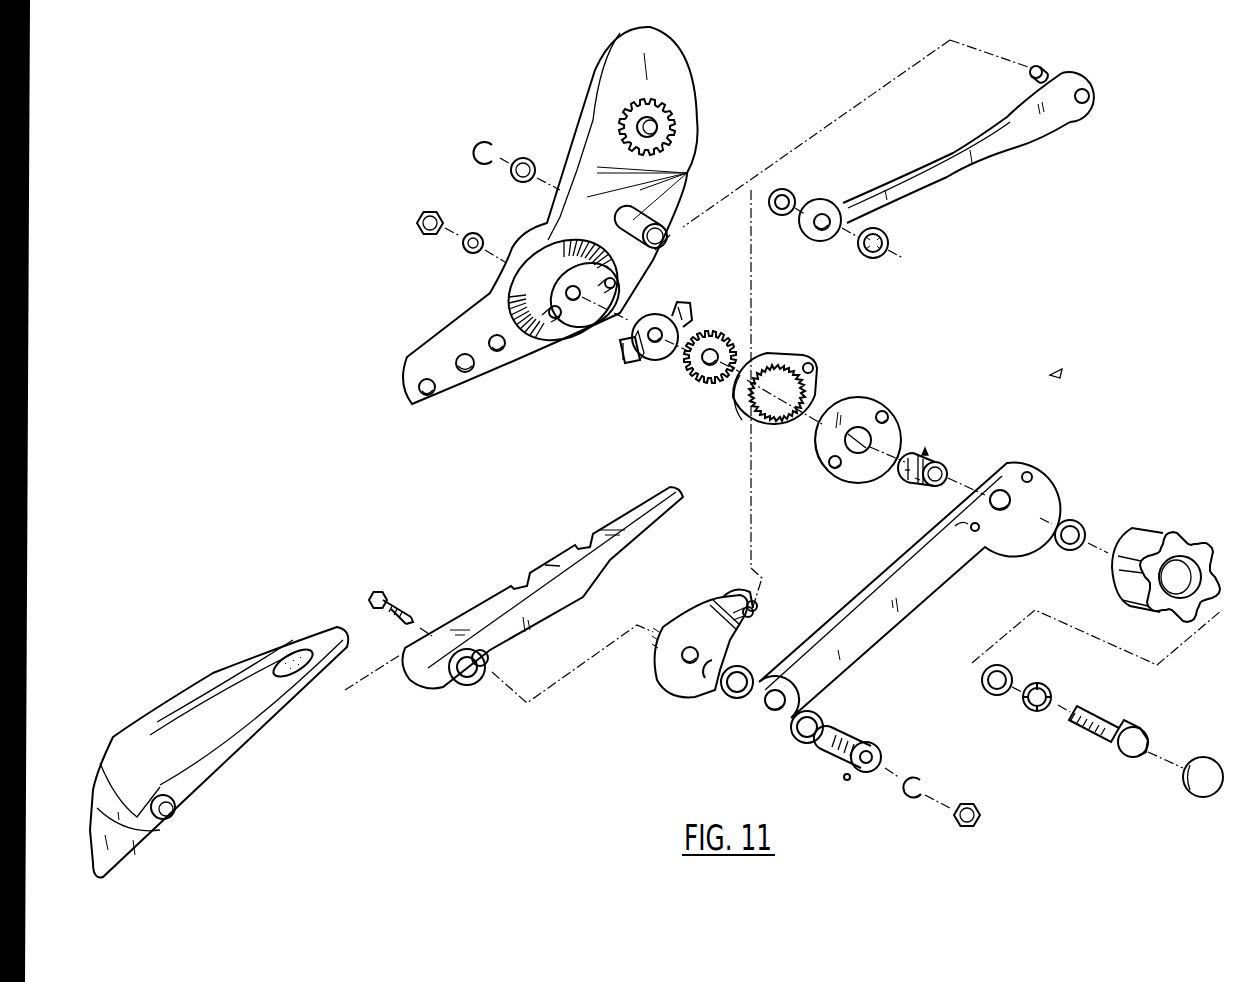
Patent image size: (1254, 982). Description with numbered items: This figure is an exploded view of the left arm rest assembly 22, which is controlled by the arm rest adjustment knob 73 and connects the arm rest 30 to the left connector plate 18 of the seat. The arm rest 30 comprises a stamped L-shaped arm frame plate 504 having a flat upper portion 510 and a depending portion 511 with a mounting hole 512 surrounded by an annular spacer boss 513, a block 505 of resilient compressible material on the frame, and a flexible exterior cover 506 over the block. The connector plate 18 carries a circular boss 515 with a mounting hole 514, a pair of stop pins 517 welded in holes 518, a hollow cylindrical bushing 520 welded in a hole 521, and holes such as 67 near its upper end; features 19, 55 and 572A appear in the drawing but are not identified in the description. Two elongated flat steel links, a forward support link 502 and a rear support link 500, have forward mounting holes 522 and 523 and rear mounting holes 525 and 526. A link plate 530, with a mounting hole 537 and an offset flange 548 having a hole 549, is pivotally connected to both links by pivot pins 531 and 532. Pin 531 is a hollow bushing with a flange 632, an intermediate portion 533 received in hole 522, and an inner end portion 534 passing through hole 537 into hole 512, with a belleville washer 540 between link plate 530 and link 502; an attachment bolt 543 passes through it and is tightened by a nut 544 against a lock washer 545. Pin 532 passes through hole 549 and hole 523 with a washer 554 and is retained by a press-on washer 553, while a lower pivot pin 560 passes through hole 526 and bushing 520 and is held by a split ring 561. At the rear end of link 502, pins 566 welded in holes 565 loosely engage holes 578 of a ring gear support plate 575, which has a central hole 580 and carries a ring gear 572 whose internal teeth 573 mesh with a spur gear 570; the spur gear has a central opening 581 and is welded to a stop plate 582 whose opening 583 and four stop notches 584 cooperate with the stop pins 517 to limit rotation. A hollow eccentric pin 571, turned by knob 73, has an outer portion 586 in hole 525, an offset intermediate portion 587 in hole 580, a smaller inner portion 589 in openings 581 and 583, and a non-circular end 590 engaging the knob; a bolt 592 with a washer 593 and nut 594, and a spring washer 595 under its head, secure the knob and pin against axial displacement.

The left connector plate 18 is at (683, 60).
The hole 67 is at (667, 120).
The split-ring washer 561 is at (485, 140).
The nut 594 is at (433, 210).
The washer 593 is at (475, 233).
The hole 521 is at (688, 172).
The hollow cylindrical bushing 520 is at (640, 217).
The holes 518 is at (553, 305).
The stop pins 517 is at (657, 247).
The circular boss 515 is at (535, 290).
The mounting hole 514 is at (575, 302).
The hole 55 is at (428, 396).
The hole 19 is at (466, 373).
The stop notches 584 is at (688, 305).
The central circular opening 583 is at (656, 328).
The spur gear stop plate 582 is at (660, 360).
The spur gear 570 is at (712, 340).
The central circular opening 581 is at (710, 366).
The ring gear 572 is at (772, 352).
The hole 572A is at (813, 362).
The internal teeth 573 is at (795, 392).
The ring gear support plate 575 is at (870, 400).
The pin-receiving holes 578 is at (888, 414).
The central circular hole 580 is at (845, 440).
The eccentric pin 571 is at (925, 448).
The non-circular end portion 590 is at (938, 462).
The inner cylindrical portion 589 is at (905, 472).
The intermediate cylindrical portion 587 is at (915, 480).
The outer cylindrical portion 586 is at (930, 485).
The pins 566 is at (1007, 462).
The holes 565 is at (1033, 477).
The mounting hole 525 is at (1012, 500).
The left arm rest assembly 22 is at (1050, 375).
The arm rest adjustment knob 73 is at (1205, 560).
The lower pivot pin 560 is at (1090, 88).
The mounting hole 526 is at (1090, 98).
The rear support link 500 is at (1018, 148).
The washer 554 is at (793, 192).
The press-on washer 553 is at (890, 240).
The mounting hole 523 is at (823, 232).
The upper portion 510 is at (547, 565).
The arm frame plate 504 is at (590, 597).
The depending portion 511 is at (528, 628).
The attachment bolt 543 is at (400, 608).
The resilient layer 505 is at (295, 650).
The exterior cover 506 is at (222, 673).
The arm rest 30 is at (155, 720).
The mounting hole 512 is at (458, 683).
The annular boss 513 is at (474, 688).
The mounting hole 549 is at (737, 592).
The pivot pin 532 is at (756, 604).
The flange 548 is at (752, 613).
The mounting hole 537 is at (680, 657).
The link plate 530 is at (670, 678).
The belleville washer 540 is at (722, 690).
The mounting hole 522 is at (767, 708).
The inner end portion 534 is at (815, 718).
The flange 632 is at (875, 748).
The intermediate portion 533 is at (840, 752).
The pivot pin 531 is at (845, 782).
The lock washer 545 is at (923, 782).
The nut 544 is at (982, 818).
The forward support link 502 is at (893, 612).
The spring washer 595 is at (1037, 712).
The bolt 592 is at (1150, 735).